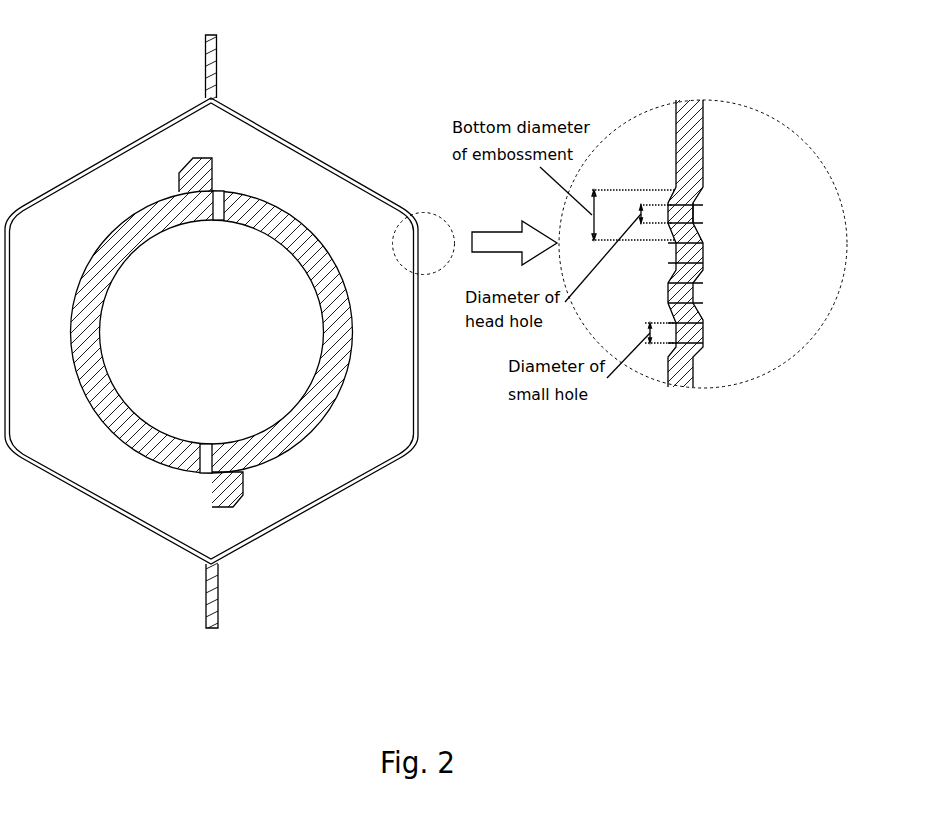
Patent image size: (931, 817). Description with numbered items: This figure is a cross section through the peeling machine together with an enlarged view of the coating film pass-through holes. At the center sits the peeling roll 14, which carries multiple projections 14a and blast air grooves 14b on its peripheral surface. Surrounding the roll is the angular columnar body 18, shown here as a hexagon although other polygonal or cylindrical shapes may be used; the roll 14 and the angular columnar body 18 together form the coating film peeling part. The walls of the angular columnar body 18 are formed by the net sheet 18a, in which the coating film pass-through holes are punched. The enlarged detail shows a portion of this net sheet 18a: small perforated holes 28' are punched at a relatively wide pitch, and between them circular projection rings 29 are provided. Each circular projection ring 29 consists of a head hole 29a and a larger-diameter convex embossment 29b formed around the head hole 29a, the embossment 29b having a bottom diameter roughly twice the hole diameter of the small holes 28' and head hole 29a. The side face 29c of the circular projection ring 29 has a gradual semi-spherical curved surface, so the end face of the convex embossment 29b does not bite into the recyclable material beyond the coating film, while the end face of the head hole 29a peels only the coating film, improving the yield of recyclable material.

The peeling roll 14 is at (262, 194).
The projections 14a is at (207, 157).
The blast air grooves 14b is at (218, 188).
The angular columnar body 18 is at (403, 220).
The net sheet 18a is at (343, 168).
The small perforated holes 28' is at (732, 273).
The circular projection ring 29 is at (794, 162).
The head hole 29a is at (693, 208).
The convex embossment 29b is at (700, 190).
The side face 29c is at (695, 200).